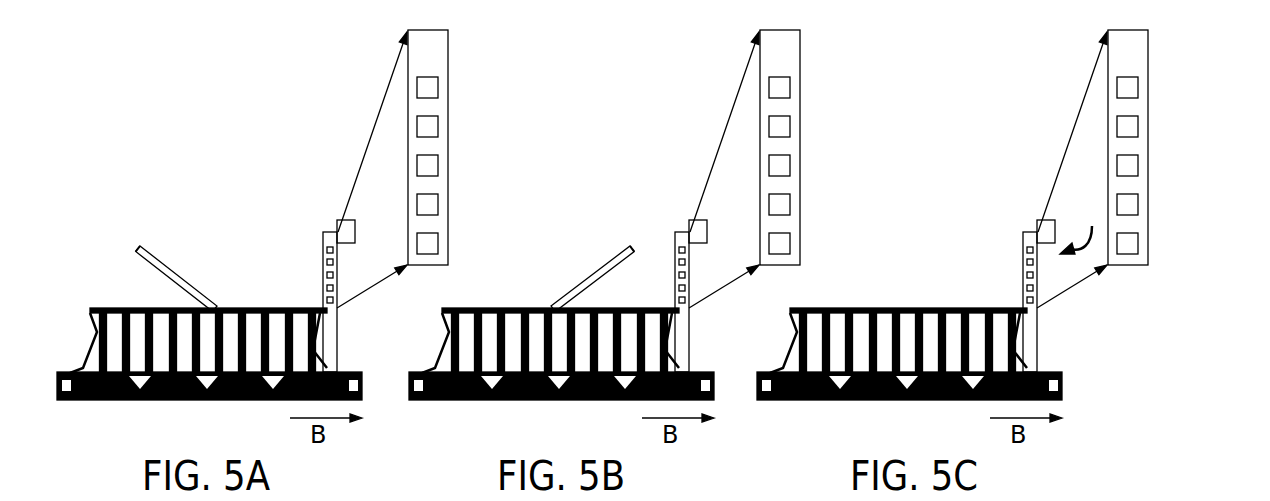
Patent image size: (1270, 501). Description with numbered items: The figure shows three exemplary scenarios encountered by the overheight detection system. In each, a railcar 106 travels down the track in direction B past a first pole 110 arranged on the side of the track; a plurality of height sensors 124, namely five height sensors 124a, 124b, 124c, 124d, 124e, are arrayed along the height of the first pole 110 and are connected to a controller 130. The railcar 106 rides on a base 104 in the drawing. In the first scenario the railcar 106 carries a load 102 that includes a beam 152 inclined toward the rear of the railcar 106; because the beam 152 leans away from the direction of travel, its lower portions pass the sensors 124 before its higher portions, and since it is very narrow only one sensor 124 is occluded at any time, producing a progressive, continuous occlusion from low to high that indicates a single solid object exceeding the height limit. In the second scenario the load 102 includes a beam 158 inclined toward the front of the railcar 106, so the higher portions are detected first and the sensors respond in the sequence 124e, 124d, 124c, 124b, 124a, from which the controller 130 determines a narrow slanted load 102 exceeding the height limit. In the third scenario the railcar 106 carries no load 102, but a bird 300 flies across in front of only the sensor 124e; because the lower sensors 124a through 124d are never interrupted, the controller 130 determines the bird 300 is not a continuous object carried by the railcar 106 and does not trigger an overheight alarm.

In FIG. 5A, the load 102 is at (173, 253).
In FIG. 5B, the load 102 is at (587, 247).
In FIG. 5A, the base 104 is at (104, 401).
In FIG. 5B, the base 104 is at (561, 410).
In FIG. 5C, the base 104 is at (909, 410).
In FIG. 5A, the railcar 106 is at (136, 322).
In FIG. 5B, the railcar 106 is at (550, 318).
In FIG. 5C, the railcar 106 is at (898, 312).
In FIG. 5A, the first pole 110 is at (327, 231).
In FIG. 5B, the first pole 110 is at (683, 260).
In FIG. 5A, the height sensors 124 is at (322, 249).
In FIG. 5B, the height sensors 124 is at (646, 249).
In FIG. 5C, the height sensors 124 is at (993, 248).
In FIG. 5A, the height sensor 124a is at (438, 246).
In FIG. 5B, the height sensor 124a is at (824, 250).
In FIG. 5C, the height sensor 124a is at (1172, 250).
In FIG. 5A, the height sensor 124b is at (438, 207).
In FIG. 5B, the height sensor 124b is at (824, 211).
In FIG. 5C, the height sensor 124b is at (1172, 211).
In FIG. 5A, the height sensor 124c is at (438, 168).
In FIG. 5B, the height sensor 124c is at (824, 172).
In FIG. 5C, the height sensor 124c is at (1172, 172).
In FIG. 5A, the height sensor 124d is at (438, 129).
In FIG. 5B, the height sensor 124d is at (824, 133).
In FIG. 5C, the height sensor 124d is at (1172, 133).
In FIG. 5A, the height sensor 124e is at (438, 90).
In FIG. 5B, the height sensor 124e is at (824, 94).
In FIG. 5C, the height sensor 124e is at (1172, 94).
In FIG. 5A, the controller 130 is at (342, 220).
In FIG. 5B, the controller 130 is at (679, 196).
In FIG. 5C, the controller 130 is at (1026, 197).
In FIG. 5A, the beam 152 is at (139, 247).
In FIG. 5B, the beam 158 is at (603, 217).
In FIG. 5C, the bird 300 is at (1057, 171).